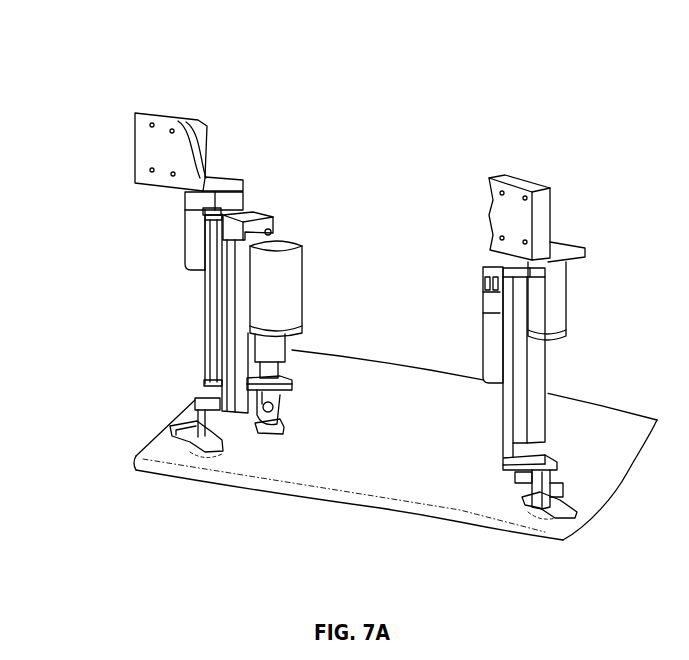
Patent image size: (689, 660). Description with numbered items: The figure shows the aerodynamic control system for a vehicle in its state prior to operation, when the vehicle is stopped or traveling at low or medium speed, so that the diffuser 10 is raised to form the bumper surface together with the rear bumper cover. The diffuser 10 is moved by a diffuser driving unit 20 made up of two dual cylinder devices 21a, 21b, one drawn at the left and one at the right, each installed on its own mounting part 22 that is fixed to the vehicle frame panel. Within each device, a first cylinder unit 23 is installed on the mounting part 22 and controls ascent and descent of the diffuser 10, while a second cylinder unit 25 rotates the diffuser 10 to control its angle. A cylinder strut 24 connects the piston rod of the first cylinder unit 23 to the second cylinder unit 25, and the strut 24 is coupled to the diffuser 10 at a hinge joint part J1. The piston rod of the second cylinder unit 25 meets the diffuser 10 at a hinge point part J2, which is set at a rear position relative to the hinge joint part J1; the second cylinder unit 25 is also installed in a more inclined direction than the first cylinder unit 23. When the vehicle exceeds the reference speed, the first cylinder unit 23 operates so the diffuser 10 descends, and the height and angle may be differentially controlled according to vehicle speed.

The diffuser 10 is at (349, 490).
The diffuser driving unit 20 is at (488, 53).
The dual cylinder device 21a is at (472, 194).
The dual cylinder device 21b is at (264, 180).
The mounting part 22 is at (146, 143).
The first cylinder unit 23 is at (184, 299).
The cylinder strut 24 is at (238, 367).
The second cylinder unit 25 is at (307, 350).
The hinge joint part J1 is at (227, 455).
The hinge point part J2 is at (281, 436).